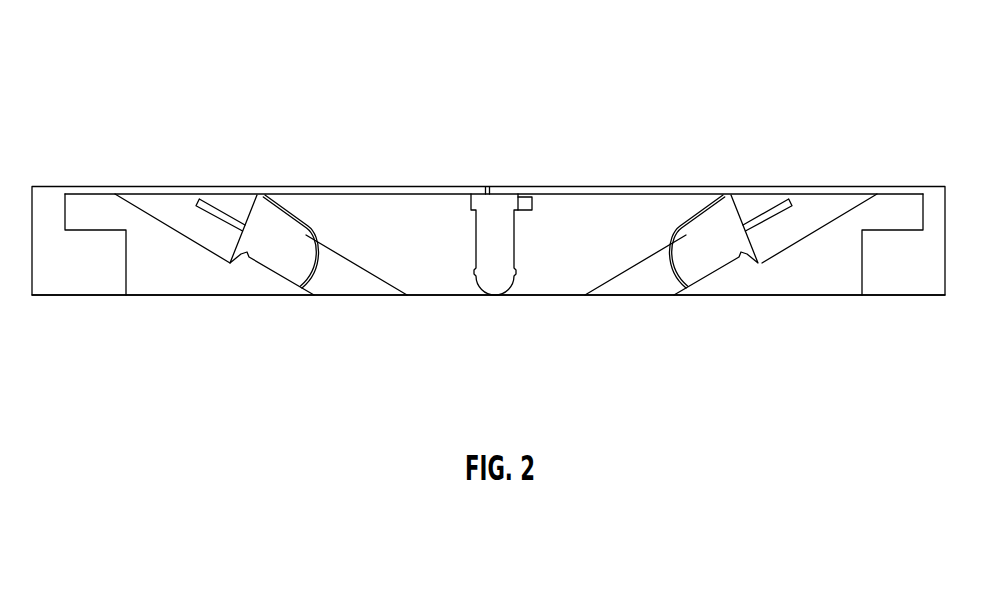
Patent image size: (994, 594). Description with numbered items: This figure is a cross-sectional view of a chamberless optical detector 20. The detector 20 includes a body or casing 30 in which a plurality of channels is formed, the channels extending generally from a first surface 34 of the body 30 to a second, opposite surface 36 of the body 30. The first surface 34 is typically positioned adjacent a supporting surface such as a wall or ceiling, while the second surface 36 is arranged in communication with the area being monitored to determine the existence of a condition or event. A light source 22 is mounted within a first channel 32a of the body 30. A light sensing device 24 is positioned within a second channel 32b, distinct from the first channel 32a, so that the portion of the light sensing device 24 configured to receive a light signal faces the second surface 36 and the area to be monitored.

The optical detector 20 is at (88, 115).
The light source 22 is at (265, 265).
The light sensing device 24 is at (710, 273).
The body 30 is at (583, 222).
The first channel 32a is at (327, 278).
The second channel 32b is at (640, 278).
The first surface 34 is at (397, 192).
The second surface 36 is at (427, 297).